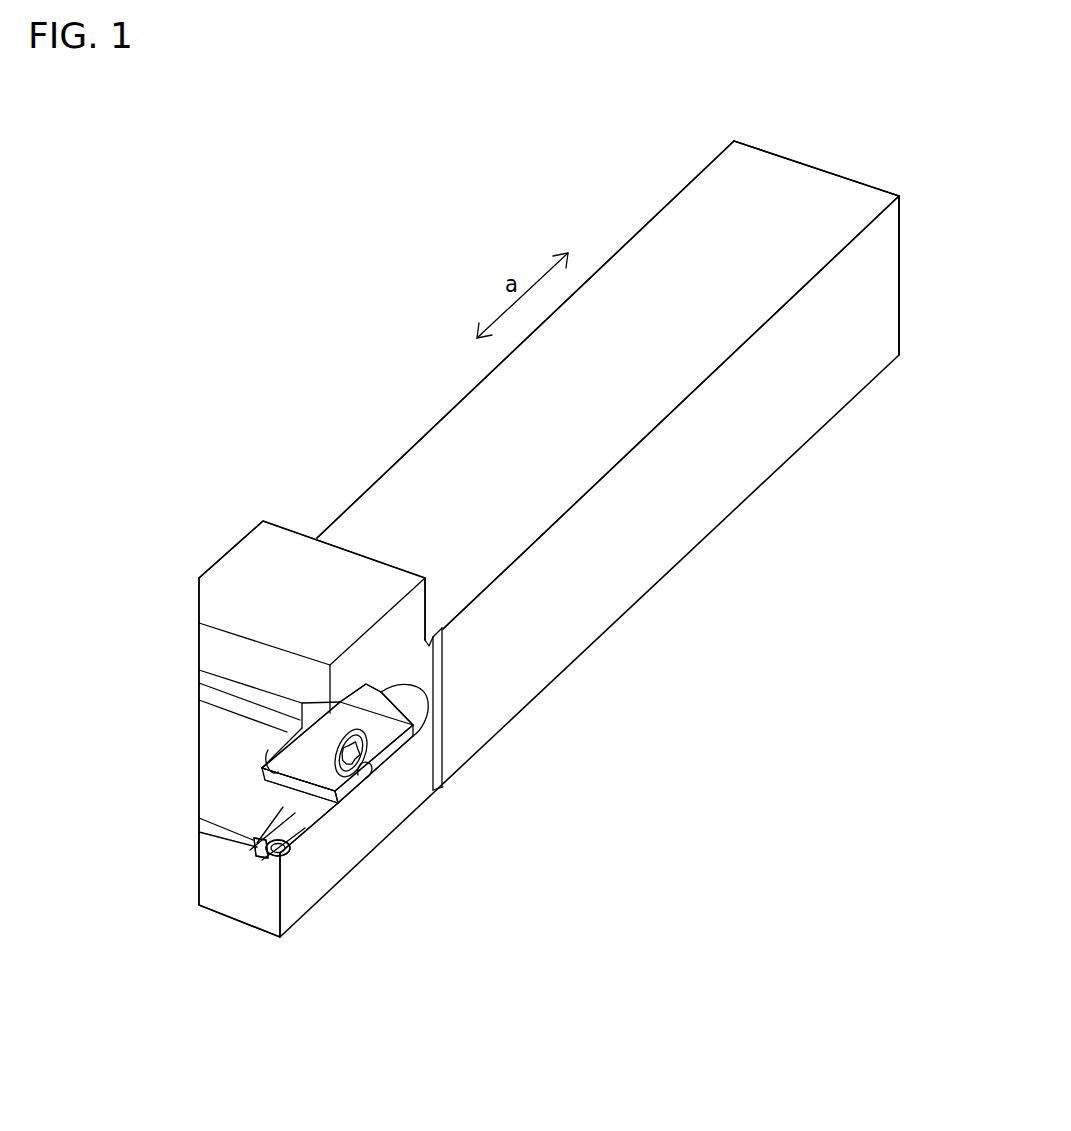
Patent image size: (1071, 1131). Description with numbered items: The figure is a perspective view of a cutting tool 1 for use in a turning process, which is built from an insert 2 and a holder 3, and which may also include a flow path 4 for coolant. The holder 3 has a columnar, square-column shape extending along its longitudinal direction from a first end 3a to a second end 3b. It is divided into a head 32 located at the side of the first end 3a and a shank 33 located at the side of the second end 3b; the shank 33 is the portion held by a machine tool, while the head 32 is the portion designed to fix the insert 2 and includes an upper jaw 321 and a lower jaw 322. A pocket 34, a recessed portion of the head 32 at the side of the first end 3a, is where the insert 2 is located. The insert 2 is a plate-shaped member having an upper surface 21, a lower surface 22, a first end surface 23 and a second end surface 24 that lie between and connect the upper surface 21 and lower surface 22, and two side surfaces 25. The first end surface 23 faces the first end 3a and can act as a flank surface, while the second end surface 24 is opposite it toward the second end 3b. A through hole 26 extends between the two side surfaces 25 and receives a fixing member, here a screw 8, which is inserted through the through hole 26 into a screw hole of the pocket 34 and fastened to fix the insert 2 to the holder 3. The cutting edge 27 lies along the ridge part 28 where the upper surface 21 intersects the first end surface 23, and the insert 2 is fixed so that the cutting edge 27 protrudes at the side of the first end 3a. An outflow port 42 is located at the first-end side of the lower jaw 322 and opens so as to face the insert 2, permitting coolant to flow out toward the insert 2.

The cutting tool 1 is at (947, 162).
The insert 2 is at (257, 767).
The holder 3 is at (335, 322).
The first end 3a is at (238, 892).
The second end 3b is at (815, 167).
The flow path 4 is at (272, 848).
The outflow port 42 is at (270, 834).
The screw 8 is at (366, 757).
The upper surface 21 is at (295, 731).
The lower surface 22 is at (352, 797).
The first end surface 23 is at (284, 802).
The second end surface 24 is at (390, 703).
The side surface 25 is at (332, 797).
The through hole 26 is at (385, 737).
The cutting edge 27 is at (298, 779).
The ridge part 28 is at (272, 760).
The head 32 is at (245, 539).
The shank 33 is at (450, 411).
The pocket 34 is at (372, 774).
The upper jaw 321 is at (370, 657).
The lower jaw 322 is at (297, 882).